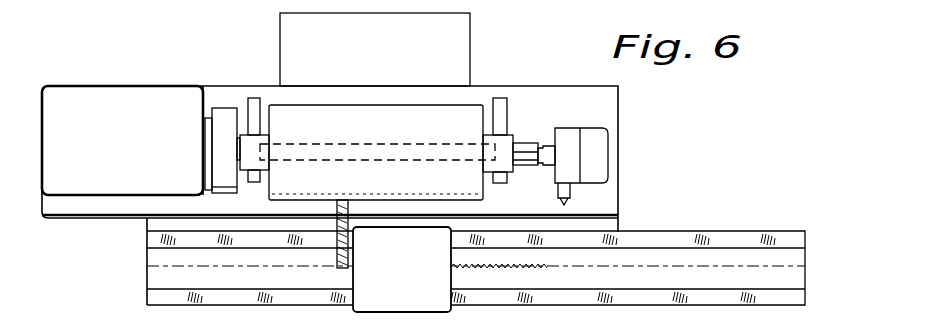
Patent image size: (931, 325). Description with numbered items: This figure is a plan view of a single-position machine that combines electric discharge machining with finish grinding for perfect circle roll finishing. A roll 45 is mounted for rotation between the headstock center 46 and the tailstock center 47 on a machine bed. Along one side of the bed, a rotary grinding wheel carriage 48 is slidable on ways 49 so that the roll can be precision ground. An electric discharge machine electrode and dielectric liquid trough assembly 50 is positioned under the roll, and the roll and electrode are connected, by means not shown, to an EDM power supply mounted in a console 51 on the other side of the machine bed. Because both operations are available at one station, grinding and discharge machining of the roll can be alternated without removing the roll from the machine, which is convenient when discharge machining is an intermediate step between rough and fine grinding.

The roll 45 is at (466, 108).
The headstock center 46 is at (148, 88).
The tailstock center 47 is at (567, 134).
The rotary grinding wheel carriage 48 is at (372, 300).
The ways 49 is at (688, 240).
The electric discharge machine electrode and dielectric liquid trough assembly 50 is at (378, 143).
The console 51 is at (470, 31).